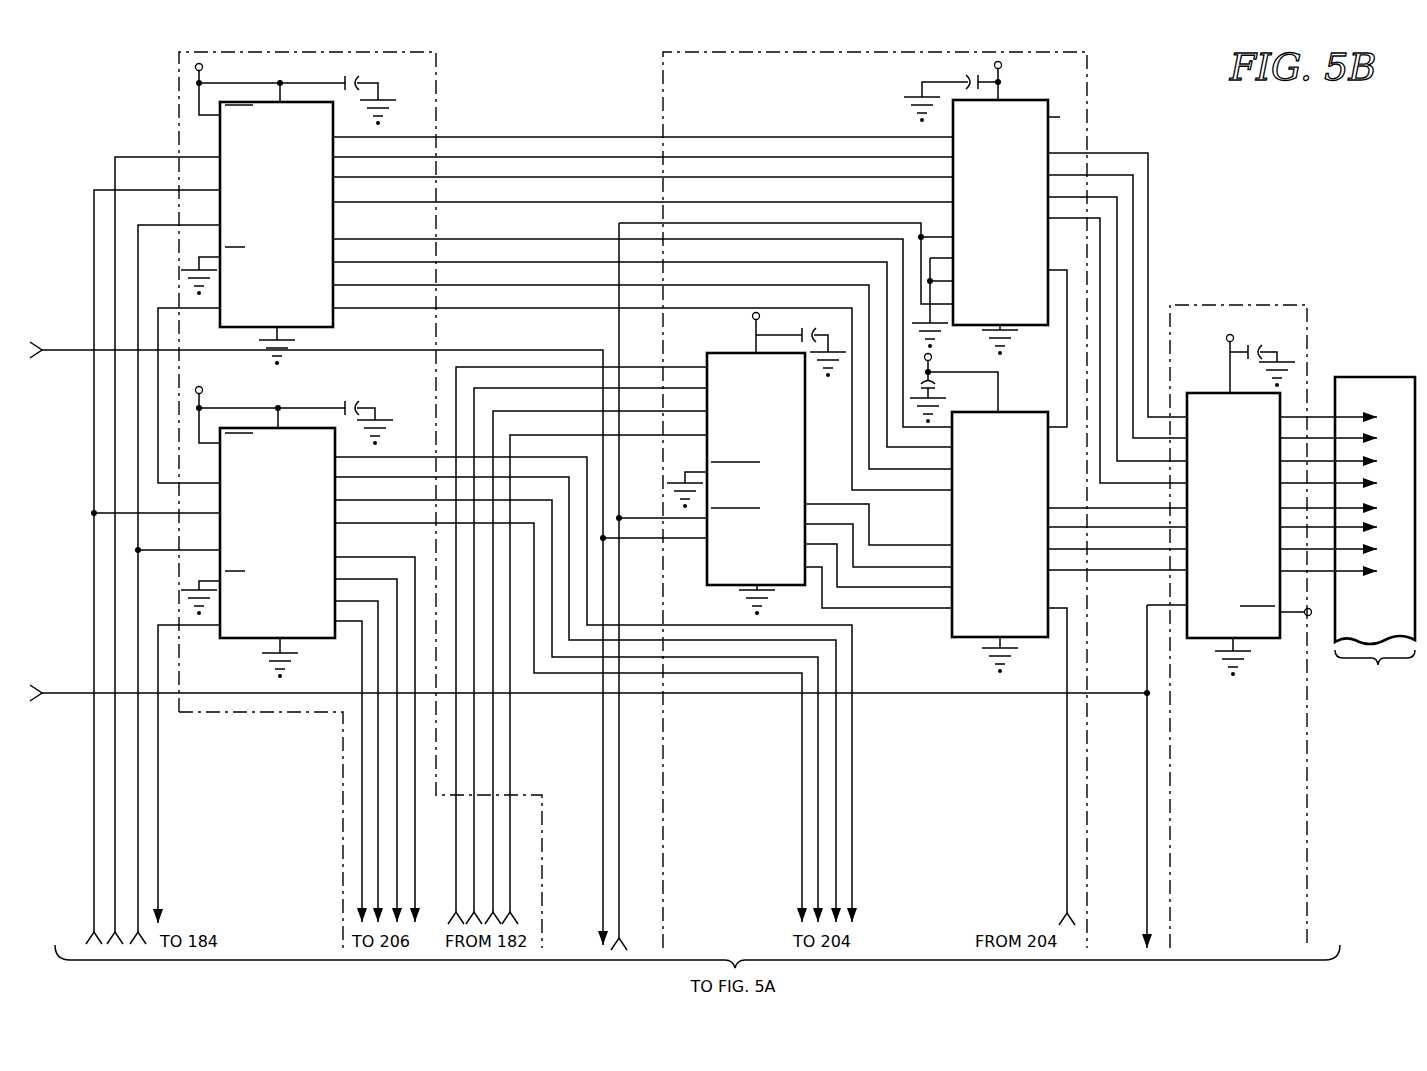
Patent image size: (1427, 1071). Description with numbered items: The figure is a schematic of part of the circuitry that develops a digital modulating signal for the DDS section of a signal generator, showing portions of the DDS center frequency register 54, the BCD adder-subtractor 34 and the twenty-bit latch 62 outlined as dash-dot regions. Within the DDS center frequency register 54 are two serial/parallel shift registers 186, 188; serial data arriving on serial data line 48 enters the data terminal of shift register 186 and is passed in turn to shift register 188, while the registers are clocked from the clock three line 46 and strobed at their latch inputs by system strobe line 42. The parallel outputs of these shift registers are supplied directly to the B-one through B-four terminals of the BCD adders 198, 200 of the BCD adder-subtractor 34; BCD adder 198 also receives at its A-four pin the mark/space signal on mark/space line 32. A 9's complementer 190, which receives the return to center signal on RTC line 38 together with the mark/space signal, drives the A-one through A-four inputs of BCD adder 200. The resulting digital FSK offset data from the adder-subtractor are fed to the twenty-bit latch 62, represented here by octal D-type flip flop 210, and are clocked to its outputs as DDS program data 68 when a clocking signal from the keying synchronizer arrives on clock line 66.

The mark/space line 32 is at (622, 770).
The BCD adder-subtractor 34 is at (1087, 60).
The RTC line 38 is at (46, 352).
The system strobe line 42 is at (140, 852).
The clock 3 line 46 is at (94, 812).
The serial data line 48 is at (118, 816).
The DDS center frequency register 54 is at (179, 68).
The 20-bit latch 62 is at (1305, 305).
The clock line 66 is at (62, 693).
The DDS program data 68 is at (1374, 561).
The serial/parallel shift register 186 is at (333, 327).
The serial/parallel shift register 188 is at (310, 640).
The 9's complementer 190 is at (740, 588).
The BCD adder 198 is at (1040, 327).
The BCD adder 200 is at (955, 637).
The octal D-type flip flop 210 is at (1268, 640).